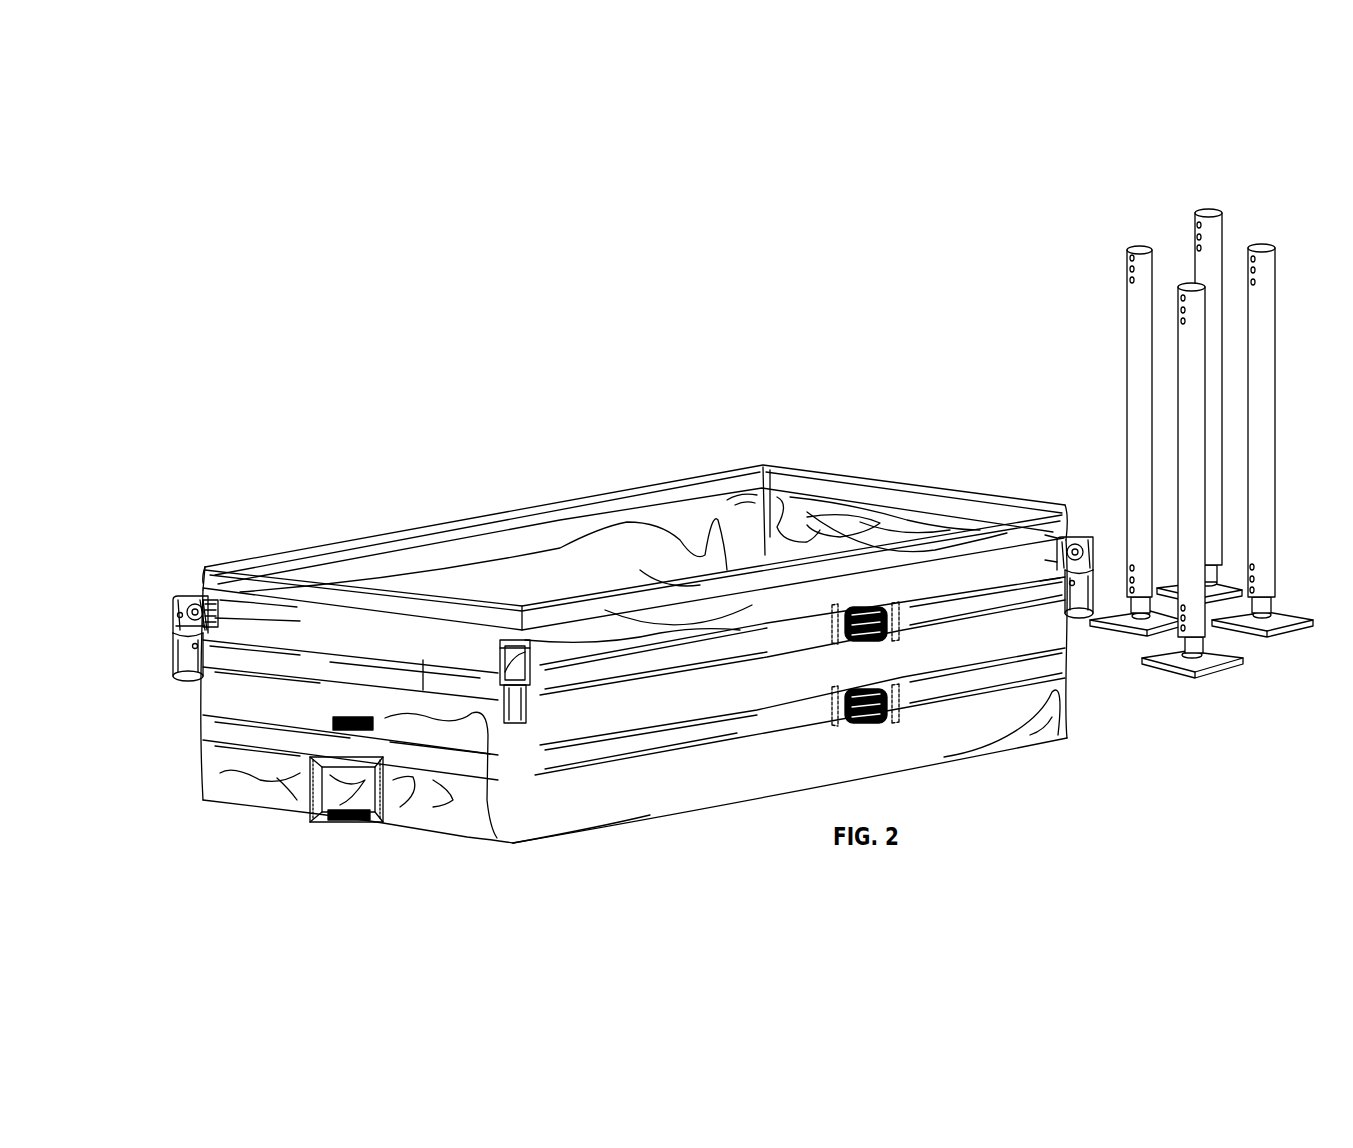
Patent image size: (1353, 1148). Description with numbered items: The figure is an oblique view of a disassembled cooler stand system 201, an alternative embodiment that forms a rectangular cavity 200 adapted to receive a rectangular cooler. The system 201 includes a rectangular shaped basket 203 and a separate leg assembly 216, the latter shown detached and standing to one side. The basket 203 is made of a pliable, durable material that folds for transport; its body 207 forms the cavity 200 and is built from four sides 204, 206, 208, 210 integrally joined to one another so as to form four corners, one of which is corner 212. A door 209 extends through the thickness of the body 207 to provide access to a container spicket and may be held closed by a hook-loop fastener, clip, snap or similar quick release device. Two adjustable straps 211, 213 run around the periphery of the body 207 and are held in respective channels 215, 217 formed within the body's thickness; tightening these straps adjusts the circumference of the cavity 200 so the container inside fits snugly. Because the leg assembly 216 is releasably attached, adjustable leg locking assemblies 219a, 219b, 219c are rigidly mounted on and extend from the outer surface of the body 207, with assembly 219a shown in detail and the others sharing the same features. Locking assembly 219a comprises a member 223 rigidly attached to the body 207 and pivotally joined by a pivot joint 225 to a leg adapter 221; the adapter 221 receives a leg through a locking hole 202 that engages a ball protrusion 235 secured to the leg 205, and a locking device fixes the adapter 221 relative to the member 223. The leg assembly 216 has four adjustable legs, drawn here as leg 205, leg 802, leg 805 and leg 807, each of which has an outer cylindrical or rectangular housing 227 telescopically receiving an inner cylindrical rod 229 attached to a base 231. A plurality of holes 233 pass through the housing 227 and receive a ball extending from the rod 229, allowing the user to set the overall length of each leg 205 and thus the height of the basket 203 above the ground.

The rectangular cavity 200 is at (692, 530).
The system 201 is at (262, 178).
The locking hole 202 is at (190, 646).
The basket 203 is at (408, 428).
The side 204 is at (475, 512).
The leg 205 is at (1103, 182).
The side 206 is at (412, 602).
The body 207 is at (650, 815).
The side 208 is at (667, 583).
The door 209 is at (332, 818).
The side 210 is at (895, 490).
The adjustable strap 211 is at (858, 716).
The corner 212 is at (222, 550).
The adjustable strap 213 is at (855, 617).
The channel 215 is at (920, 710).
The leg assembly 216 is at (995, 252).
The channel 217 is at (963, 596).
The leg locking assembly 219a is at (143, 573).
The leg locking assembly 219b is at (548, 672).
The leg locking assembly 219c is at (1053, 592).
The leg adapter 221 is at (183, 668).
The member 223 is at (193, 598).
The pivot joint 225 is at (187, 615).
The housing 227 is at (1128, 378).
The rod 229 is at (1130, 607).
The base 231 is at (1136, 630).
The holes 233 is at (1129, 568).
The ball protrusion 235 is at (1127, 258).
The leg pole 802 is at (1180, 275).
The leg 805 is at (1199, 195).
The leg 807 is at (1258, 228).